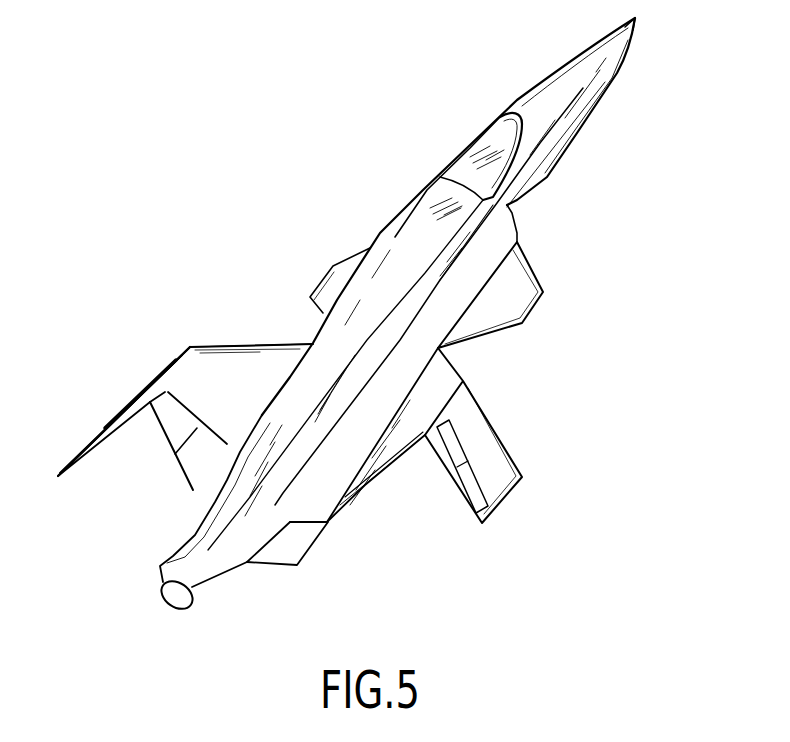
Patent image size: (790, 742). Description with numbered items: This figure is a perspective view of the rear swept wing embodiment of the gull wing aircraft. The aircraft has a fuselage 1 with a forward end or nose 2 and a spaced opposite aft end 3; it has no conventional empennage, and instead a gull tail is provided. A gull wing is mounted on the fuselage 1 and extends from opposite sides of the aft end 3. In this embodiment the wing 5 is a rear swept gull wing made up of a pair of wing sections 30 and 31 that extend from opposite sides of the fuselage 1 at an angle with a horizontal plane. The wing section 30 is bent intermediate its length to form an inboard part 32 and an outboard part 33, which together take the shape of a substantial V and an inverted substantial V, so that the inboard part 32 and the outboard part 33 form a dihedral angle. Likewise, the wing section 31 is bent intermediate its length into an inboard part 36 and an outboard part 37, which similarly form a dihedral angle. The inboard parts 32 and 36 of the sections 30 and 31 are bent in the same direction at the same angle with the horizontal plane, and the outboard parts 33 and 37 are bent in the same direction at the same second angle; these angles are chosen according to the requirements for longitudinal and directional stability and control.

The fuselage 1 is at (340, 325).
The nose 2 is at (622, 28).
The aft end 3 is at (195, 590).
The wing 5 is at (220, 365).
The wing section 30 is at (364, 452).
The wing section 31 is at (210, 400).
The inboard part 32 is at (393, 430).
The outboard part 33 is at (503, 457).
The inboard part 36 is at (235, 367).
The outboard part 37 is at (128, 413).